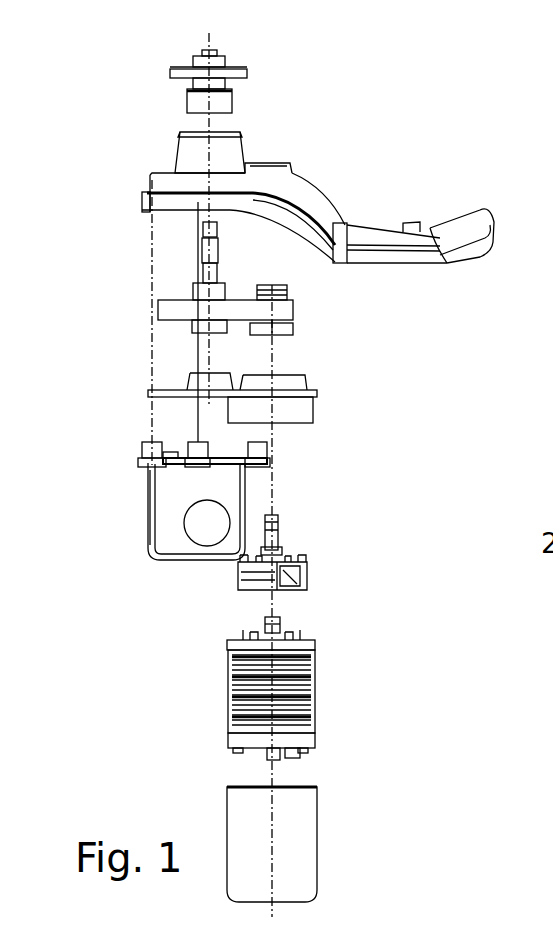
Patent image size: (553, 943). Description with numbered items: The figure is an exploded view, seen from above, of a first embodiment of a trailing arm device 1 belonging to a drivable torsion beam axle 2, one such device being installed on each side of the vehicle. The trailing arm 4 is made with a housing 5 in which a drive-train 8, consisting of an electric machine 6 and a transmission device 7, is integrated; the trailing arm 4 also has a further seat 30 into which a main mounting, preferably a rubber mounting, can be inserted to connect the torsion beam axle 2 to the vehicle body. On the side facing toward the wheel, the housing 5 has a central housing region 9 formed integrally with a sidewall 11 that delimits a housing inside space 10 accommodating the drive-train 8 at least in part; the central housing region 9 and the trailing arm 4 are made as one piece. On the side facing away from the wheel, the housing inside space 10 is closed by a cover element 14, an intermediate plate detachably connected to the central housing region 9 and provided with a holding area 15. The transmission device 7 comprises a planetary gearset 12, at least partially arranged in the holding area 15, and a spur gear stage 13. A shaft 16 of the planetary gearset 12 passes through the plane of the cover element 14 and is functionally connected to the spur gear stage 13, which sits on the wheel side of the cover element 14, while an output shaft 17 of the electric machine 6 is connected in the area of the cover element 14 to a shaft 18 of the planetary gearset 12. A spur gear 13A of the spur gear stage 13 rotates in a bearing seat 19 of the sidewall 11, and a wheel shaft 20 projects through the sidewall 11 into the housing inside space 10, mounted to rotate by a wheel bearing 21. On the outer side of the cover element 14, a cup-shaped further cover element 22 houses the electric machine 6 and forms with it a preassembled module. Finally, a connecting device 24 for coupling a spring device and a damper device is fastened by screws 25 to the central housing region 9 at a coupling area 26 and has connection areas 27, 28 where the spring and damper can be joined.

The trailing arm device 1 is at (413, 217).
The drivable torsion beam axle 2 is at (398, 130).
The trailing arm 4 is at (373, 267).
The housing 5 is at (140, 172).
The electric machine 6 is at (323, 683).
The transmission device 7 is at (350, 552).
The drive-train 8 is at (157, 640).
The central housing region 9 is at (143, 195).
The housing inside space 10 is at (243, 228).
The sidewall 11 is at (227, 167).
The planetary gearset 12 is at (312, 575).
The spur gear stage 13 is at (132, 310).
The spur gear 13A is at (290, 317).
The cover element 14 is at (140, 395).
The holding area 15 is at (300, 432).
The shaft 16 is at (278, 530).
The output shaft 17 is at (285, 625).
The shaft 18 is at (258, 592).
The bearing seat 19 is at (293, 170).
The wheel shaft 20 is at (203, 250).
The wheel bearing 21 is at (227, 119).
The further cover element 22 is at (300, 842).
The connecting device 24 is at (140, 540).
The screws 25 is at (265, 468).
The coupling area 26 is at (170, 490).
The connection area 27 is at (200, 537).
The connection area 28 is at (150, 440).
The seat 30 is at (477, 260).